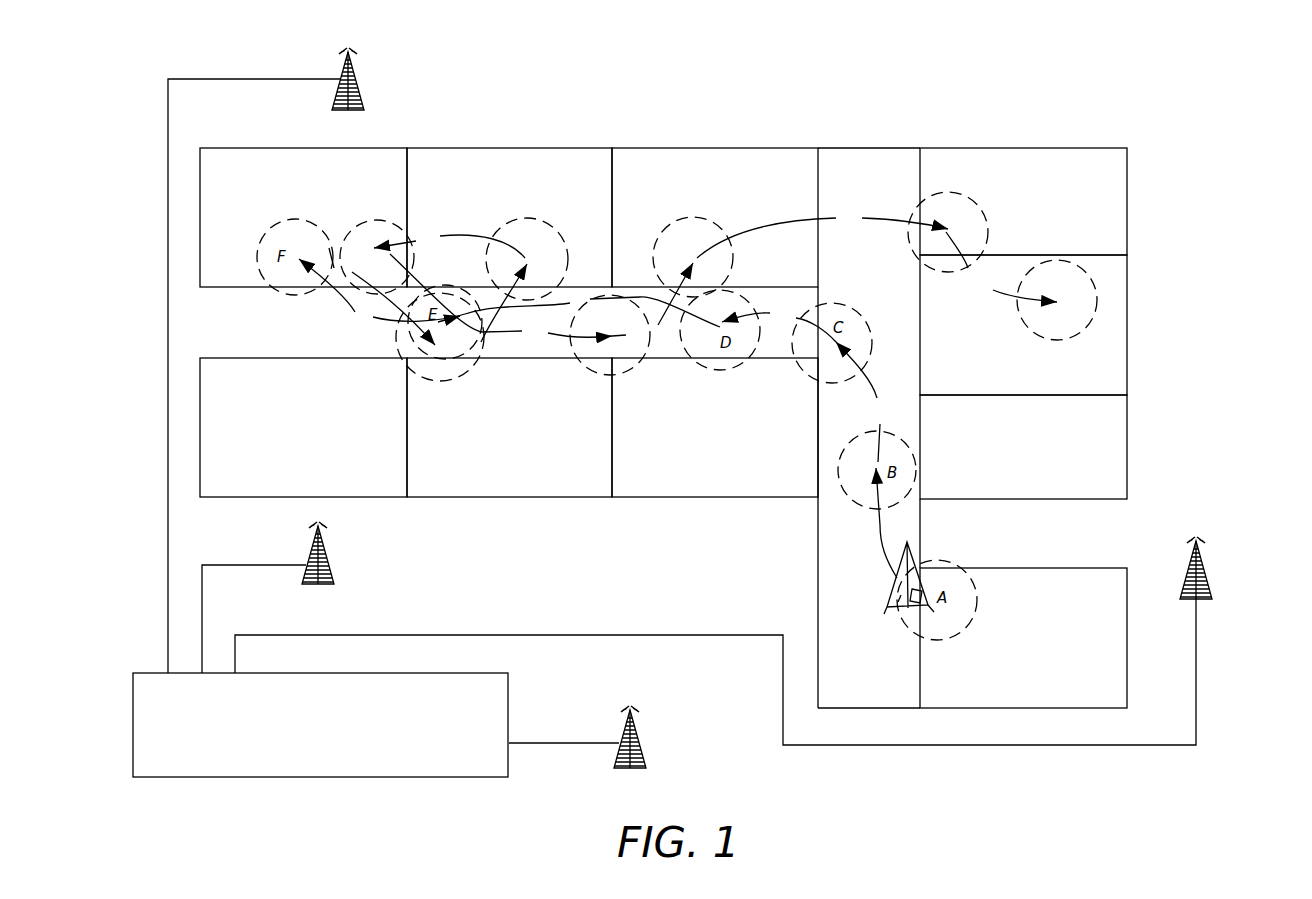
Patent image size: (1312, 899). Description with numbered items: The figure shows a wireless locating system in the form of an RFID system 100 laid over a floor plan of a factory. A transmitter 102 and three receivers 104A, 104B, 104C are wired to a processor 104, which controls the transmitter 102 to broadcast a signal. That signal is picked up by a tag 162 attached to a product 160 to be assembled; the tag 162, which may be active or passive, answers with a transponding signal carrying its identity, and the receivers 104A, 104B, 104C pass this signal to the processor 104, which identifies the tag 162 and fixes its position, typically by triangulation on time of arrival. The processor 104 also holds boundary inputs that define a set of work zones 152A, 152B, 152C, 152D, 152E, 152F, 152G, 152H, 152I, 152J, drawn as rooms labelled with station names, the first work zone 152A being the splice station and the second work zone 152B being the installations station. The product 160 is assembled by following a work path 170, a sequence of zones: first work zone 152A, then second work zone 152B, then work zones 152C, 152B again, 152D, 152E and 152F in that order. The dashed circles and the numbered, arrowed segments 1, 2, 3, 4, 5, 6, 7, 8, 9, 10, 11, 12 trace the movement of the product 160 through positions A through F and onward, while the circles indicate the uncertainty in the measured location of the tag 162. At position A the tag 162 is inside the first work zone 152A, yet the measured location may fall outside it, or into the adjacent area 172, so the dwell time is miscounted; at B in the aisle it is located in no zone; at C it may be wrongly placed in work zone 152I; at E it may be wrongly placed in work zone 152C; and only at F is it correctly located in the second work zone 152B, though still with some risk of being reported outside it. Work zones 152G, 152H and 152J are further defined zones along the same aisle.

The RFID system 100 is at (1182, 146).
The transmitter 102 is at (642, 735).
The processor 104 is at (509, 733).
The receiver 104A is at (363, 95).
The receiver 104B is at (327, 565).
The receiver 104C is at (1204, 560).
The first work zone 152A is at (985, 568).
The second work zone 152B is at (378, 148).
The work zone 152C is at (540, 148).
The work zone 152D is at (733, 148).
The work zone 152E is at (1024, 148).
The work zone 152F is at (1127, 332).
The work zone 152G is at (376, 497).
The work zone 152H is at (543, 497).
The work zone 152I is at (673, 497).
The work zone 152J is at (1127, 447).
The product 160 is at (887, 590).
The tag 162 is at (907, 612).
The work path 170 is at (880, 216).
The area 172 is at (962, 583).
The path segment 1 is at (886, 523).
The path segment 2 is at (860, 402).
The path segment 3 is at (779, 326).
The path segment 4 is at (546, 312).
The path segment 5 is at (334, 290).
The path segment 6 is at (382, 296).
The path segment 7 is at (498, 304).
The path segment 8 is at (449, 246).
The path segment 9 is at (508, 297).
The path segment 10 is at (666, 301).
The path segment 11 is at (822, 235).
The path segment 12 is at (1001, 267).